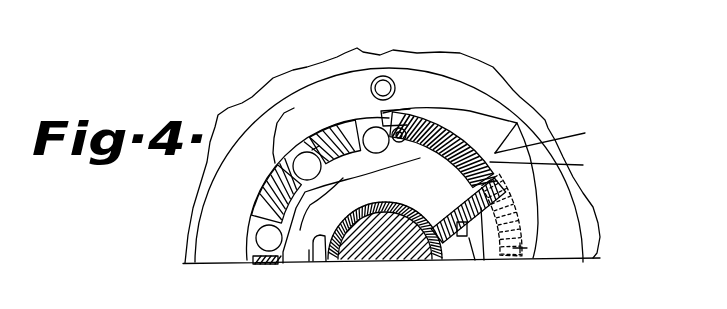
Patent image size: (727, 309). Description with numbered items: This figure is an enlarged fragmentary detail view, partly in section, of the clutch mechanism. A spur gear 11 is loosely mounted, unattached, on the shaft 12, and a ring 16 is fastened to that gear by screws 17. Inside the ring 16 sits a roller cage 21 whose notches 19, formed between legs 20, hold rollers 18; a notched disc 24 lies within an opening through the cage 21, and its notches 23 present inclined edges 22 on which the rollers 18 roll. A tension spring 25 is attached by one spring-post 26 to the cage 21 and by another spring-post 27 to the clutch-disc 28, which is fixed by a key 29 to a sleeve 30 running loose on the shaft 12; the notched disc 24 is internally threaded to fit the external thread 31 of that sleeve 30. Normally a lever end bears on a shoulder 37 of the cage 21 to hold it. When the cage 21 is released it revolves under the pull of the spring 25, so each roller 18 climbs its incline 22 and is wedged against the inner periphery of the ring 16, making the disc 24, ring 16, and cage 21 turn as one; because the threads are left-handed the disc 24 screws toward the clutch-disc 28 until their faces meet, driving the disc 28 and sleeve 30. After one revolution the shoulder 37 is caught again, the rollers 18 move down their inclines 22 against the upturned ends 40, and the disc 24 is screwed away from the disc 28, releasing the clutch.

The spur gear 11 is at (533, 112).
The shaft 12 is at (404, 250).
The ring 16 is at (323, 88).
The screws 17 is at (386, 86).
The rollers 18 is at (367, 131).
The notches 19 is at (314, 150).
The legs 20 is at (277, 198).
The cage 21 is at (275, 188).
The inclined edges 22 is at (357, 175).
The notches 23 is at (303, 198).
The disc 24 is at (305, 252).
The tension spring 25 is at (440, 136).
The spring-post 26 is at (402, 132).
The spring-post 27 is at (548, 256).
The clutch-disc 28 is at (480, 260).
The key 29 is at (480, 245).
The sleeve 30 is at (457, 255).
The external thread 31 is at (312, 262).
The shoulder 37 is at (555, 137).
The upturned ends 40 is at (275, 271).